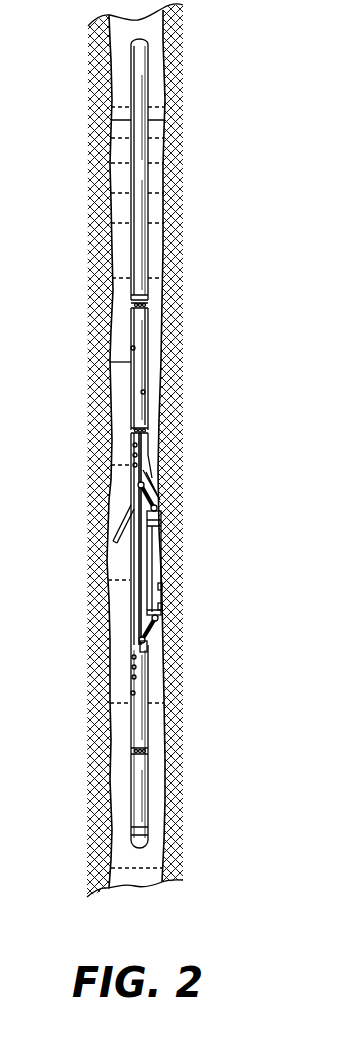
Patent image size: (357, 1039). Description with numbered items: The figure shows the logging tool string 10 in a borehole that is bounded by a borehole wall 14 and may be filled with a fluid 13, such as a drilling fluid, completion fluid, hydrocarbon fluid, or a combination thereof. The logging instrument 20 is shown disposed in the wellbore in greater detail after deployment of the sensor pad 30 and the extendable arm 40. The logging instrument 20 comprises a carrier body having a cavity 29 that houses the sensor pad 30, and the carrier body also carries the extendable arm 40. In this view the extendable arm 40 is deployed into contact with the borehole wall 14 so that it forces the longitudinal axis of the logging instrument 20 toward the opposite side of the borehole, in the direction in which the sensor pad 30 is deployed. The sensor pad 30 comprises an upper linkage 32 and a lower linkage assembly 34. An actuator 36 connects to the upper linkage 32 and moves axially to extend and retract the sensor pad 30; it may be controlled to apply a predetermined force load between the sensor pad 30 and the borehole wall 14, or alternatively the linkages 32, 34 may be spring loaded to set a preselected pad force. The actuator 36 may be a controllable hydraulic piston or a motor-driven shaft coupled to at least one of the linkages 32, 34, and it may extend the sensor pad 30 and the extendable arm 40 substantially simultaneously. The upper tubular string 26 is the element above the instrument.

The logging tool string 10 is at (180, 407).
The fluid 13 is at (158, 132).
The borehole wall 14 is at (107, 64).
The logging instrument 20 is at (148, 438).
The tubing string 26 is at (142, 73).
The cavity 29 is at (139, 565).
The sensor pad 30 is at (158, 594).
The upper linkage 32 is at (160, 493).
The linkage assembly 34 is at (160, 638).
The actuator 36 is at (148, 380).
The extendable arm 40 is at (109, 532).